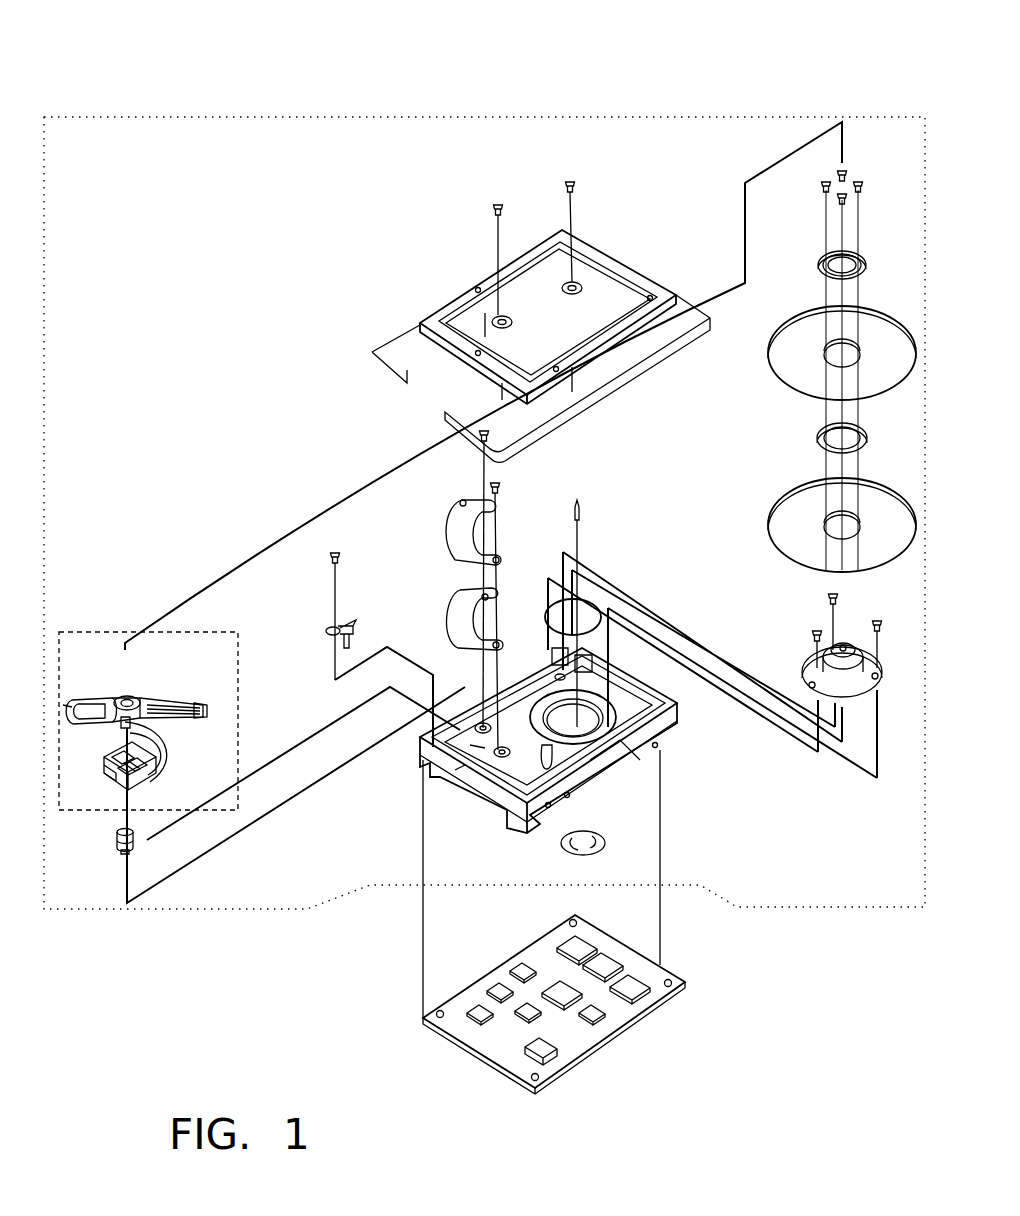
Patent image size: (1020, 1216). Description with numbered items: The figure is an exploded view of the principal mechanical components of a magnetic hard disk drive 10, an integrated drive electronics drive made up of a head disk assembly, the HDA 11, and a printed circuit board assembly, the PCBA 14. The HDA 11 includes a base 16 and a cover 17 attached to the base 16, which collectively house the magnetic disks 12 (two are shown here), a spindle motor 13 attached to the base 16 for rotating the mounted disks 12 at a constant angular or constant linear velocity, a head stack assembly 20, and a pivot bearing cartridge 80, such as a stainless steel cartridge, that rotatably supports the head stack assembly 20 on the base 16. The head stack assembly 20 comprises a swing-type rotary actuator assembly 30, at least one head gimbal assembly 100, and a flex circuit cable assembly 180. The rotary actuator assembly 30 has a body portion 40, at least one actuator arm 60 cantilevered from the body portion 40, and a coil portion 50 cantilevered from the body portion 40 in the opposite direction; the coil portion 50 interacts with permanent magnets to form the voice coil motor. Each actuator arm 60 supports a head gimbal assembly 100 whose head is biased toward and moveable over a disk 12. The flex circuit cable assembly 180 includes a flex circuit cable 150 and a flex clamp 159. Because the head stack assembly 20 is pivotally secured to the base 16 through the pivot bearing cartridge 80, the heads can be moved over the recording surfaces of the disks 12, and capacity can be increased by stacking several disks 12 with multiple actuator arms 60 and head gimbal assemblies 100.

The magnetic hard disk drive 10 is at (292, 83).
The HDA 11 is at (767, 910).
The magnetic disk 12 is at (773, 503).
The spindle motor 13 is at (803, 663).
The PCBA 14 is at (600, 1040).
The base 16 is at (676, 757).
The cover 17 is at (448, 298).
The head stack assembly 20 is at (97, 628).
The rotary actuator assembly 30 is at (125, 693).
The body portion 40 is at (148, 693).
The coil portion 50 is at (98, 722).
The actuator arm 60 is at (166, 722).
The pivot bearing cartridge 80 is at (117, 845).
The head gimbal assembly 100 is at (200, 706).
The flex circuit cable 150 is at (178, 748).
The flex clamp 159 is at (116, 770).
The flex circuit cable assembly 180 is at (162, 773).